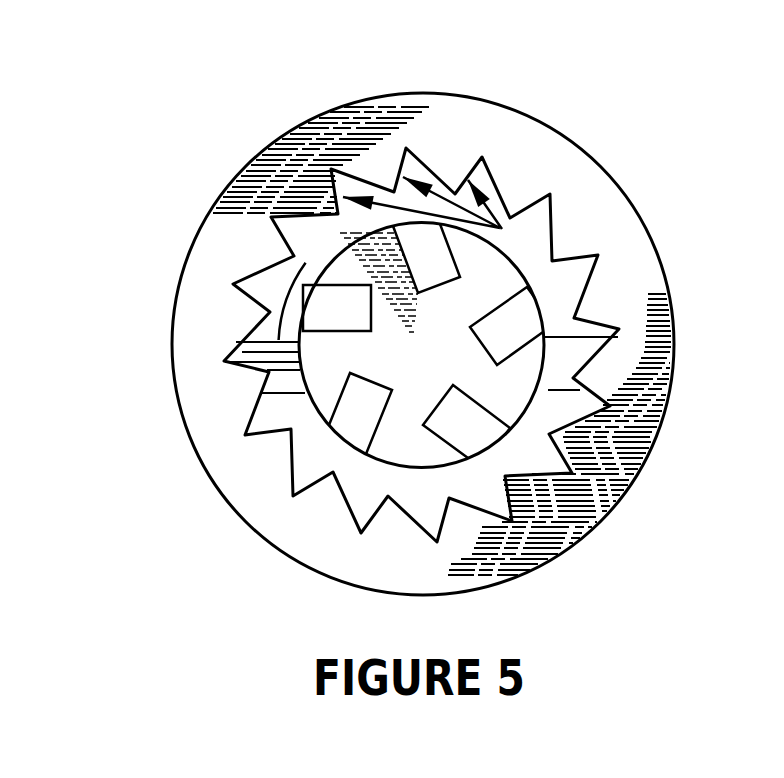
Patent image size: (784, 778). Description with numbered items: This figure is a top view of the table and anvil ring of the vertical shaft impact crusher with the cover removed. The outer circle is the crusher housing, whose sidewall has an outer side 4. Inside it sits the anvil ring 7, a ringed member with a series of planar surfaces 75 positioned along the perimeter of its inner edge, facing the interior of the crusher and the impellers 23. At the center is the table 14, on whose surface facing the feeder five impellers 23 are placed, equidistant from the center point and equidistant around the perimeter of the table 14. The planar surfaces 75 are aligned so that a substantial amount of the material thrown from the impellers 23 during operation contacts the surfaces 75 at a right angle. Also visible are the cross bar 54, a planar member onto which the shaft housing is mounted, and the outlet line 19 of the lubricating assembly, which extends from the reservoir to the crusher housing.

The outer side 4 is at (680, 318).
The anvil ring 7 is at (641, 275).
The table 14 is at (444, 369).
The outlet line 19 is at (233, 358).
The impellers 23 is at (351, 328).
The cross bar 54 is at (648, 175).
The planar surfaces 75 is at (444, 218).